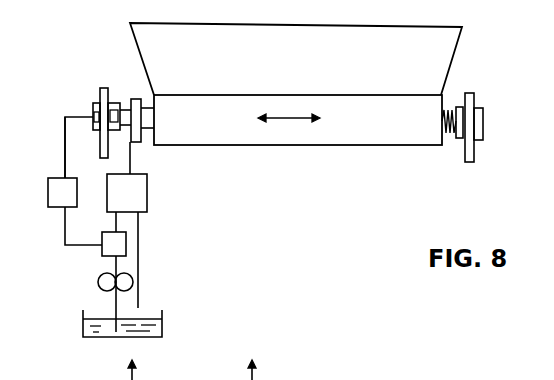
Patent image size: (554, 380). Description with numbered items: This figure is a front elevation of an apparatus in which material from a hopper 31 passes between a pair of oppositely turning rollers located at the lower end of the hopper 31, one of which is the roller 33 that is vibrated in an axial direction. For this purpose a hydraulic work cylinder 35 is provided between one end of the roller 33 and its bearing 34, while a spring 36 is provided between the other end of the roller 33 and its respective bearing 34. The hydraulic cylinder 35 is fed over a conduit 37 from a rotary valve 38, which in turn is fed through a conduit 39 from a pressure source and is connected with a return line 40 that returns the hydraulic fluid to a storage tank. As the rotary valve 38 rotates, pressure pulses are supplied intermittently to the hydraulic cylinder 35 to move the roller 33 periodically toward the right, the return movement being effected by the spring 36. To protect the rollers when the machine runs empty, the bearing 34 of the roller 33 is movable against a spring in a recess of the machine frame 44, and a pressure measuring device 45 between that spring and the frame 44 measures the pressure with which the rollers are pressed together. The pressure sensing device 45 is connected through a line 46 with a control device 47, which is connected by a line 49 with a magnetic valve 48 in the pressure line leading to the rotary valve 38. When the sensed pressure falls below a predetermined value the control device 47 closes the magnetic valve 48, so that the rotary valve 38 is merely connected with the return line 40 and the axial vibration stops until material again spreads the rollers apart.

The hopper 31 is at (419, 76).
The roller 33 is at (250, 130).
The bearing 34 is at (95, 131).
The hydraulic work cylinder 35 is at (135, 102).
The spring 36 is at (455, 125).
The conduit 37 is at (130, 158).
The rotary valve 38 is at (130, 188).
The conduit 39 is at (113, 263).
The return line 40 is at (140, 266).
The machine frame 44 is at (103, 138).
The pressure measuring device 45 is at (96, 105).
The line 46 is at (64, 151).
The control device 47 is at (65, 191).
The magnetic valve 48 is at (114, 243).
The line 49 is at (63, 223).